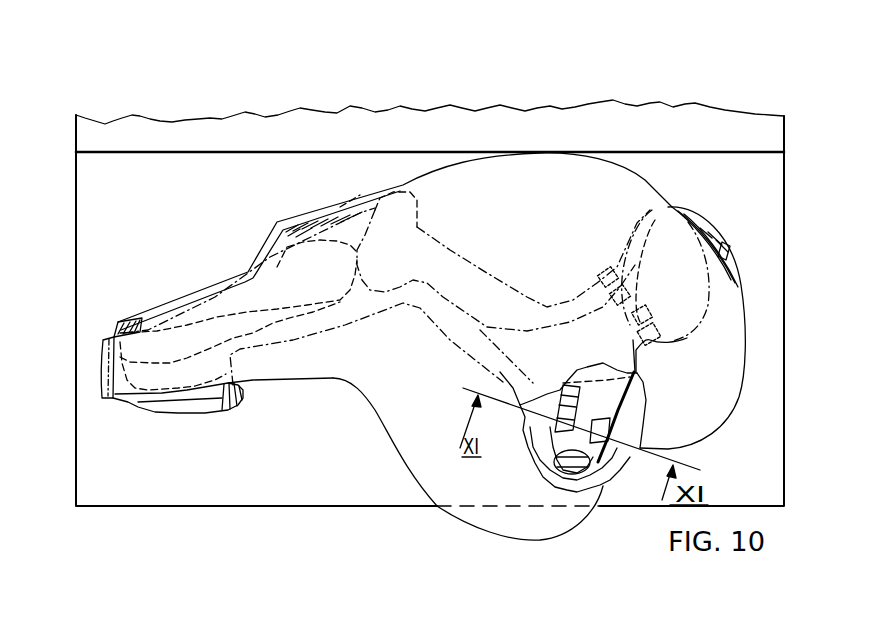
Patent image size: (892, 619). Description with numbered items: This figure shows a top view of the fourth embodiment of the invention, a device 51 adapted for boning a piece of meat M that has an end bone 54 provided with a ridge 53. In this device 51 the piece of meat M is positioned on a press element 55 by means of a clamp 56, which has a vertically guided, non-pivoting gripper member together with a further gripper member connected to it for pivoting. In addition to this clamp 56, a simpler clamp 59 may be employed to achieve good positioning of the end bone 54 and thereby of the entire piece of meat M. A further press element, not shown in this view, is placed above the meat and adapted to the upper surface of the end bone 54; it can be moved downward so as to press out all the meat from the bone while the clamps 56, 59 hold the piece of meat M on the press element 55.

The device 51 is at (737, 89).
The ridge 53 is at (588, 388).
The end bone 54 is at (660, 361).
The press element 55 is at (207, 414).
The clamp 56 is at (598, 455).
The simpler clamp 59 is at (682, 340).
The piece of meat M is at (746, 367).